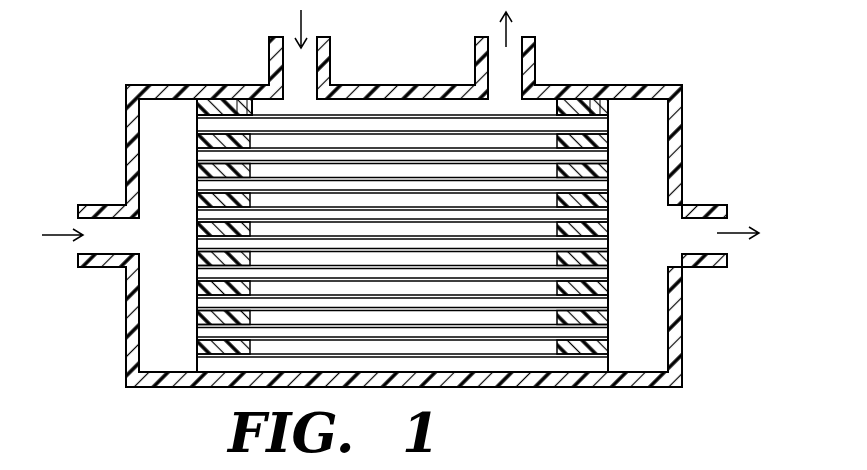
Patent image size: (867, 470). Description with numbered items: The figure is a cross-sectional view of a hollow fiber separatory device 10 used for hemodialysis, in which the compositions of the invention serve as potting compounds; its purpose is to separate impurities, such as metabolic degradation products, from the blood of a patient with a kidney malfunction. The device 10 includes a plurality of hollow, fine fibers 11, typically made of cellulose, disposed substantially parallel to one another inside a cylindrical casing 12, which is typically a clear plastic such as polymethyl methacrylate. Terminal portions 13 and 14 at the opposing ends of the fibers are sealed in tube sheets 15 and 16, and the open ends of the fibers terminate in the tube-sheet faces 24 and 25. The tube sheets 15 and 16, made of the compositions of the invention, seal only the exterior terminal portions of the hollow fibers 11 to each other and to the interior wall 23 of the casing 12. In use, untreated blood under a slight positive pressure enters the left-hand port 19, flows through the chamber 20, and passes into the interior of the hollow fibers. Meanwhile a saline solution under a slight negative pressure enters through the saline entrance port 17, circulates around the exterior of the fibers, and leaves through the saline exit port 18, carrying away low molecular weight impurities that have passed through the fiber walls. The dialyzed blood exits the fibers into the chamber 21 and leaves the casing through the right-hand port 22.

The hollow fiber separatory device 10 is at (636, 74).
The hollow fibers 11 is at (383, 127).
The cylindrical casing 12 is at (126, 128).
The terminal portion 13 is at (212, 108).
The terminal portion 14 is at (593, 110).
The tube sheet 15 is at (223, 106).
The tube sheet 16 is at (567, 104).
The saline entrance port 17 is at (313, 40).
The saline exit port 18 is at (515, 40).
The left-hand port 19 is at (77, 221).
The chamber 20 is at (167, 300).
The chamber 21 is at (648, 295).
The right-hand port 22 is at (727, 222).
The interior wall 23 is at (242, 107).
The tube-sheet face 24 is at (197, 160).
The tube-sheet face 25 is at (609, 156).